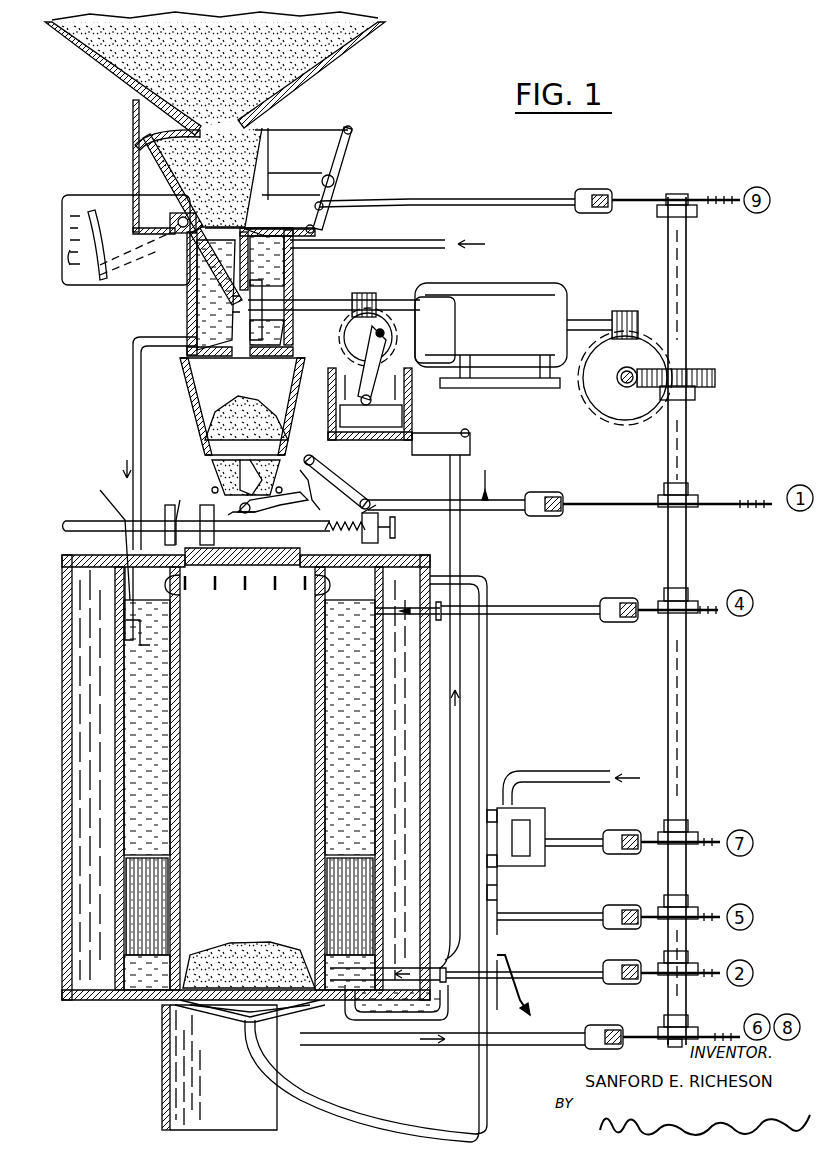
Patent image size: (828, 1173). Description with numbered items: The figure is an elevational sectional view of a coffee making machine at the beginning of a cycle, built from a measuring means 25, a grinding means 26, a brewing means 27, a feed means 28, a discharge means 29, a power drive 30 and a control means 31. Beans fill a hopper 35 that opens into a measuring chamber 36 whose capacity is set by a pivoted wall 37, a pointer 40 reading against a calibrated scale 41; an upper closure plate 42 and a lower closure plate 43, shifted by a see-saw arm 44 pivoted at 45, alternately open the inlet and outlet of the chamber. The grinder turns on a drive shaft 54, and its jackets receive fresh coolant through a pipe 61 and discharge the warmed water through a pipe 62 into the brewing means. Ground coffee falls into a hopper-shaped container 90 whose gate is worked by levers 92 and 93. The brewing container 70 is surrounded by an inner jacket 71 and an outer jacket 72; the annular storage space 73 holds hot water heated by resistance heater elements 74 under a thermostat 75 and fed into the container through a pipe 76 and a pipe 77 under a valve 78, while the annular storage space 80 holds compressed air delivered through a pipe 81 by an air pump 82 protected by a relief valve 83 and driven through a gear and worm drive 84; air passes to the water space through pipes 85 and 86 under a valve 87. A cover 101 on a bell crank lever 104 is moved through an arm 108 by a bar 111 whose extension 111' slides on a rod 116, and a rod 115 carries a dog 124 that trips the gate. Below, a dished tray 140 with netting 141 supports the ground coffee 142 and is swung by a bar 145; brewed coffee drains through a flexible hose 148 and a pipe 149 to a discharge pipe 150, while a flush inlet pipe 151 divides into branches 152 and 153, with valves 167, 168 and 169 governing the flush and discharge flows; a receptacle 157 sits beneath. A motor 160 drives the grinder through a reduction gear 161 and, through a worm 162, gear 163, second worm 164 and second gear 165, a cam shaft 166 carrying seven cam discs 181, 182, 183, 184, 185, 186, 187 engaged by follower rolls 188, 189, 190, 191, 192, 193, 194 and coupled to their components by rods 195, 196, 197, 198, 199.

The measuring means 25 is at (115, 162).
The grinding means 26 is at (160, 325).
The brewing means 27 is at (60, 600).
The feed means 28 is at (203, 477).
The discharge means 29 is at (318, 1072).
The power drive 30 is at (500, 285).
The control means 31 is at (662, 662).
The hopper 35 is at (340, 70).
The measuring chamber 36 is at (265, 152).
The wall 37 is at (170, 183).
The pointer 40 is at (100, 282).
The calibrated scale 41 is at (80, 248).
The upper closure plate 42 is at (298, 132).
The lower closure plate 43 is at (280, 225).
The see-saw arm 44 is at (338, 158).
The pivot 45 is at (333, 183).
The drive shaft 54 is at (320, 298).
The pipe 61 is at (372, 243).
The pipe 62 is at (134, 390).
The cylindrical container 70 is at (182, 692).
The inner jacket 71 is at (116, 705).
The outer jacket 72 is at (66, 690).
The annular storage space 73 is at (165, 760).
The electric resistance heater elements 74 is at (170, 898).
The thermostat 75 is at (172, 643).
The pipe 76 is at (450, 1000).
The pipe 77 is at (412, 968).
The valve 78 is at (447, 972).
The annular storage space 80 is at (90, 795).
The pipe 81 is at (472, 657).
The air pump 82 is at (376, 442).
The relief valve 83 is at (475, 440).
The gear and worm drive 84 is at (344, 336).
The pipe 85 is at (428, 650).
The pipe 86 is at (420, 618).
The valve 87 is at (472, 584).
The hopper-shaped container 90 is at (203, 405).
The lever 92 is at (210, 483).
The lever 93 is at (282, 488).
The cover 101 is at (260, 570).
The bell crank lever 104 is at (300, 490).
The arm 108 is at (332, 480).
The bar 111 is at (446, 489).
The extension 111' is at (398, 491).
The rod 115 is at (78, 522).
The rod 116 is at (396, 527).
The nose or dog 124 is at (175, 520).
The dished tray 140 is at (215, 1017).
The netting 141 is at (233, 1022).
The ground coffee 142 is at (272, 950).
The bar 145 is at (528, 1048).
The flexible hose 148 is at (306, 1112).
The pipe 149 is at (483, 1080).
The discharge pipe 150 is at (515, 960).
The inlet pipe 151 is at (540, 775).
The branch pipe 152 is at (488, 745).
The branch pipe 153 is at (498, 895).
The receptacle 157 is at (215, 1118).
The motor 160 is at (535, 288).
The reduction gear 161 is at (420, 292).
The worm 162 is at (626, 312).
The gear 163 is at (612, 403).
The second worm 164 is at (622, 368).
The second gear 165 is at (710, 370).
The cam shaft 166 is at (688, 708).
The valve 167 is at (505, 812).
The valve 168 is at (505, 872).
The valve 169 is at (510, 915).
The cam disc 181 is at (698, 200).
The cam disc 182 is at (728, 502).
The cam disc 183 is at (692, 614).
The cam disc 184 is at (708, 832).
The cam disc 185 is at (708, 907).
The cam disc 186 is at (704, 968).
The cam disc 187 is at (706, 1027).
The follower roll 188 is at (605, 195).
The follower roll 189 is at (572, 498).
The follower roll 190 is at (632, 598).
The follower roll 191 is at (636, 830).
The follower roll 192 is at (636, 905).
The follower roll 193 is at (637, 960).
The follower roll 194 is at (623, 1030).
The rod 195 is at (490, 200).
The rod 196 is at (568, 605).
The rod 197 is at (582, 838).
The rod 198 is at (572, 920).
The rod 199 is at (566, 976).